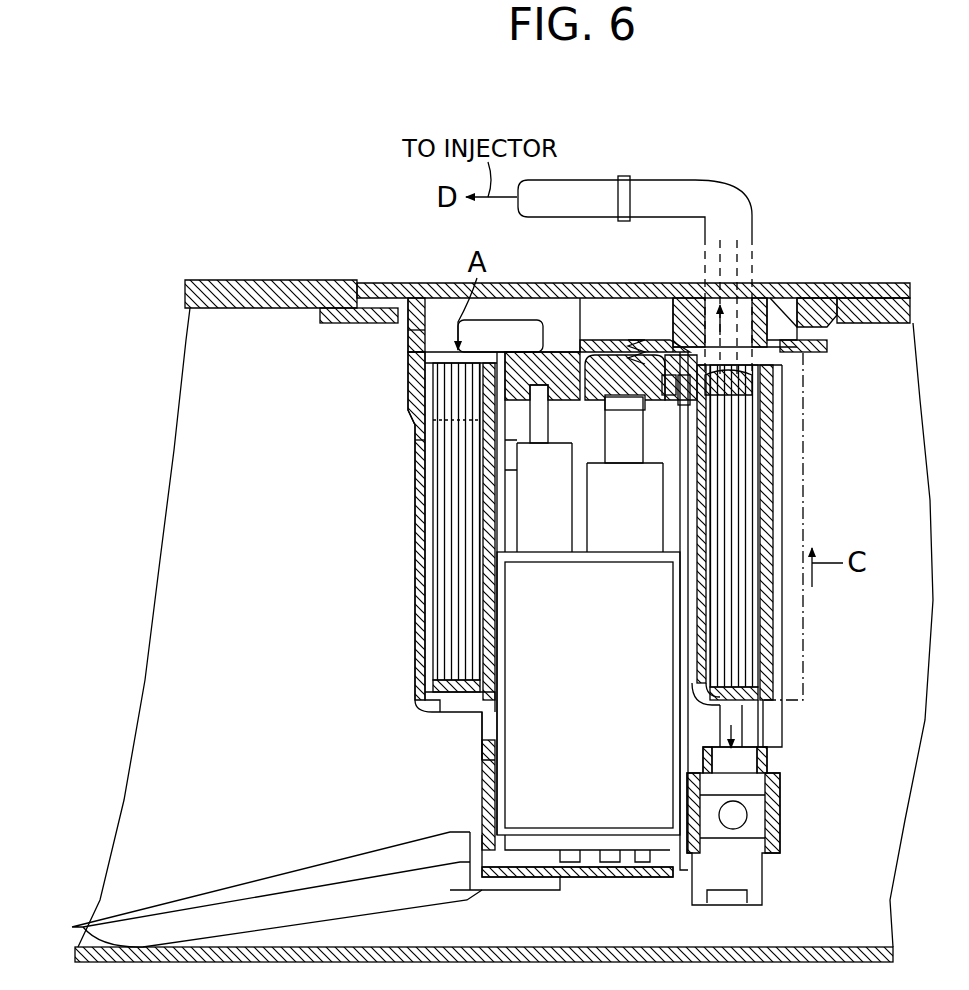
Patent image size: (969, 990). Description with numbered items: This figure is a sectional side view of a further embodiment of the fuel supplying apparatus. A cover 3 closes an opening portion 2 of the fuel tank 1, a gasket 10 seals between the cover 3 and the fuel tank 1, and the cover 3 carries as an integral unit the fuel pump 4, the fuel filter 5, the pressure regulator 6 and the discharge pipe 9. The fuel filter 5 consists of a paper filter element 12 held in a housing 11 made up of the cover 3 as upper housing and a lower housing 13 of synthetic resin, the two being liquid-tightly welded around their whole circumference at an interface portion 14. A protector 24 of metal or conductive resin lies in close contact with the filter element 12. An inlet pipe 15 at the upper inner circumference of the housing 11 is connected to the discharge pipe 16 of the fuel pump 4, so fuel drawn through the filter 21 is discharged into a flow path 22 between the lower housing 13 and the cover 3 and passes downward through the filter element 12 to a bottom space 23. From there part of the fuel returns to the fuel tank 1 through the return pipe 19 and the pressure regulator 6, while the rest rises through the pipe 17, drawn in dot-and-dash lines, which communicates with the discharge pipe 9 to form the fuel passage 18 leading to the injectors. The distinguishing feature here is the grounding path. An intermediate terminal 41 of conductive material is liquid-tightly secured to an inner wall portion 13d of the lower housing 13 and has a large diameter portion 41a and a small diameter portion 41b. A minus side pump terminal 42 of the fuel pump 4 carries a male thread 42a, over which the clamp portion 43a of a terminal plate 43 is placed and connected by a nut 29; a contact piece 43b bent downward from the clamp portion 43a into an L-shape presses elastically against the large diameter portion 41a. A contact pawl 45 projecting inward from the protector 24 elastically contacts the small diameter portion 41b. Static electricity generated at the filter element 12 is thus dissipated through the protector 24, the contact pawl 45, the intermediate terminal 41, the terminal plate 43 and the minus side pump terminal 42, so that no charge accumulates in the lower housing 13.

The fuel tank 1 is at (882, 283).
The opening portion 2 is at (835, 284).
The cover 3 is at (432, 318).
The fuel pump 4 is at (640, 622).
The fuel filter 5 is at (405, 387).
The pressure regulator 6 is at (770, 882).
The discharge pipe 9 is at (662, 190).
The gasket 10 is at (805, 300).
The housing 11 is at (410, 465).
The filter element 12 is at (445, 580).
The lower housing 13 is at (412, 662).
The inner wall portion 13d is at (700, 400).
The interface portion 14 is at (405, 352).
The inlet pipe 15 is at (560, 355).
The discharge pipe 16 is at (517, 470).
The pipe 17 is at (805, 450).
The fuel passage 18 is at (812, 385).
The return pipe 19 is at (758, 730).
The filter 21 is at (155, 893).
The flow path 22 is at (400, 300).
The bottom space 23 is at (440, 702).
The protector 24 is at (470, 450).
The nut 29 is at (636, 340).
The intermediate terminal 41 is at (690, 353).
The large diameter portion 41a is at (670, 395).
The small diameter portion 41b is at (685, 405).
The minus side pump terminal 42 is at (538, 468).
The male thread 42a is at (665, 355).
The terminal plate 43 is at (612, 355).
The clamp portion 43a is at (598, 345).
The contact piece 43b is at (628, 410).
The contact pawl 45 is at (815, 347).